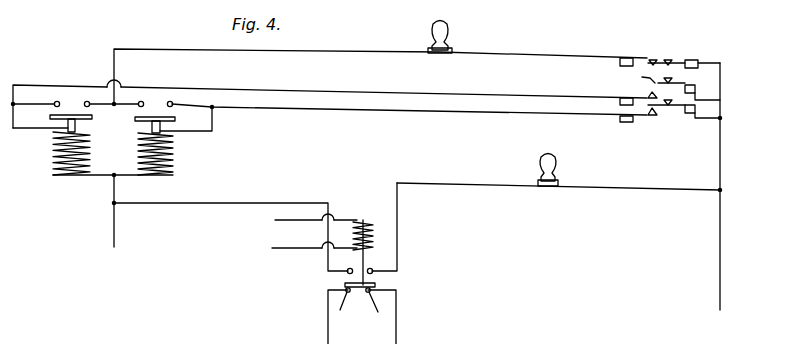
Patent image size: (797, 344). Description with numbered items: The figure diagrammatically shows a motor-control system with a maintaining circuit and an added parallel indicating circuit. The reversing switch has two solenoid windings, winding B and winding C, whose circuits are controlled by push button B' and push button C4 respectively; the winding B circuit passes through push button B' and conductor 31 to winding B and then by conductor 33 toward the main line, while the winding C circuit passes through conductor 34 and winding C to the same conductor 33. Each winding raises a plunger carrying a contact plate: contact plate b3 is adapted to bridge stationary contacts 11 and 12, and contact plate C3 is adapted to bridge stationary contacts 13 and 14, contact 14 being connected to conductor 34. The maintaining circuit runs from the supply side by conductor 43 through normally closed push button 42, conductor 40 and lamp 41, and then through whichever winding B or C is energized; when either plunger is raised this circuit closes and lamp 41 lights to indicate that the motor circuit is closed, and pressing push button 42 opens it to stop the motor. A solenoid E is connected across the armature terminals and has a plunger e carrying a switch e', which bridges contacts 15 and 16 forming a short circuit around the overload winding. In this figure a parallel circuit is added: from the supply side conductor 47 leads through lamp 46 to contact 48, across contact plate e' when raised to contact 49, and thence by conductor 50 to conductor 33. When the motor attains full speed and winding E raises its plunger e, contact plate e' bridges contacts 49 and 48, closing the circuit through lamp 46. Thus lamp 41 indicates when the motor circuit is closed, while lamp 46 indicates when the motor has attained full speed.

The stationary contact 11 is at (36, 97).
The stationary contact 12 is at (106, 97).
The stationary contact 13 is at (138, 97).
The stationary contact 14 is at (172, 97).
The contact 15 is at (339, 307).
The contact 16 is at (371, 300).
The conductor 31 is at (432, 92).
The conductor 33 is at (114, 232).
The conductor 34 is at (427, 111).
The conductor 40 is at (311, 52).
The lamp 41 is at (450, 33).
The push button 42 is at (669, 58).
The conductor 43 is at (722, 82).
The lamp 46 is at (556, 161).
The conductor 47 is at (478, 183).
The contact 48 is at (373, 273).
The contact 49 is at (347, 272).
The conductor 50 is at (231, 227).
The winding B is at (71, 153).
The winding C is at (173, 152).
The contact plate b3 is at (66, 120).
The contact plate C3 is at (171, 118).
The push button B' is at (662, 85).
The pin C4 is at (672, 108).
The solenoid E is at (361, 220).
The plunger e is at (363, 268).
The switch e' is at (362, 317).